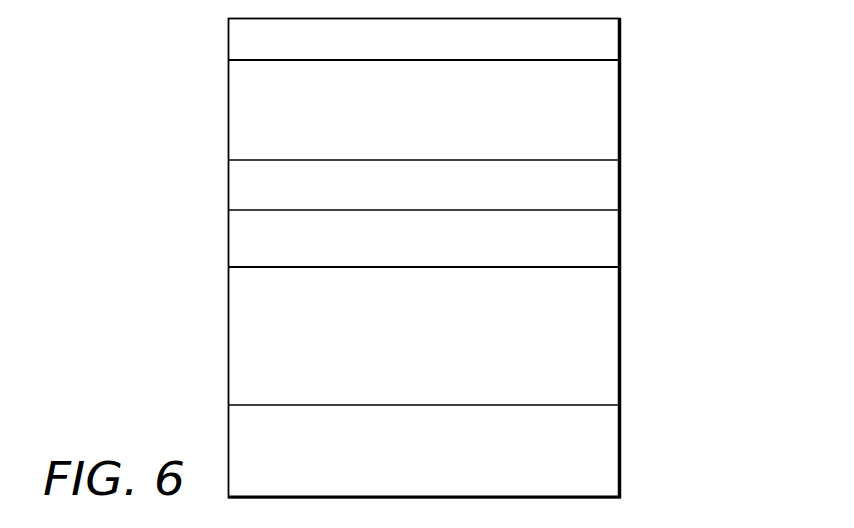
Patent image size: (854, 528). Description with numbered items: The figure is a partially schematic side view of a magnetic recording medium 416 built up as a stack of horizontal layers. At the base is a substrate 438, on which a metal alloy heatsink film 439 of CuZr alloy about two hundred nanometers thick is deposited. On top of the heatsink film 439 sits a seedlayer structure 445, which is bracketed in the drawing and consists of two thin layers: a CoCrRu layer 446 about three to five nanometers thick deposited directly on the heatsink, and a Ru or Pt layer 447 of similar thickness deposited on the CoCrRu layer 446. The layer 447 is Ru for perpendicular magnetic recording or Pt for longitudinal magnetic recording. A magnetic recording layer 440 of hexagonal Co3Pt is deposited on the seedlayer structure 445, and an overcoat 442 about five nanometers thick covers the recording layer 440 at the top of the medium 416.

The magnetic recording medium 416 is at (321, 258).
The overcoat 442 is at (611, 43).
The magnetic recording layer 440 is at (609, 116).
The seedlayer structure 445 is at (218, 162).
The Ru or Pt layer 447 is at (611, 183).
The CoCrRu layer 446 is at (611, 241).
The metal alloy heatsink film 439 is at (607, 343).
The substrate 438 is at (607, 448).